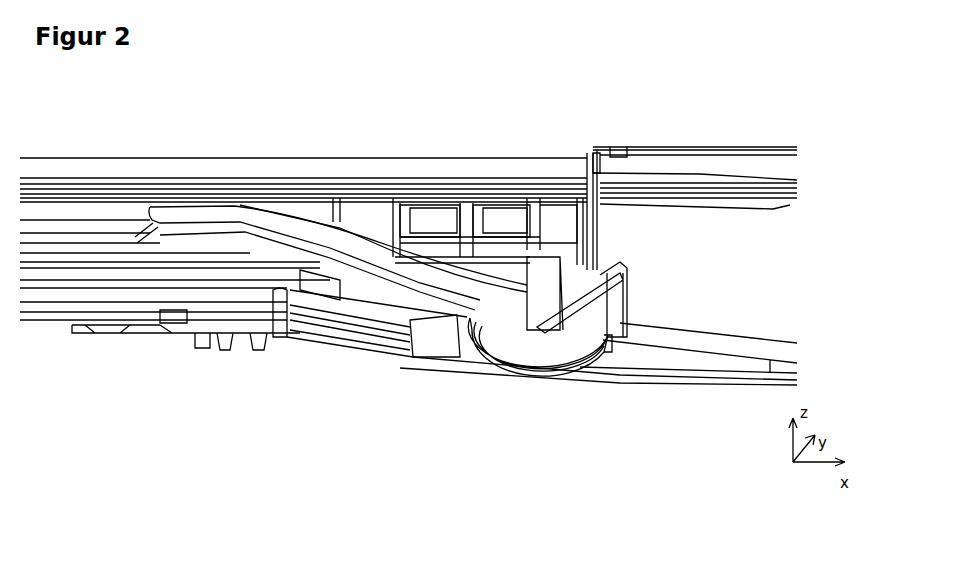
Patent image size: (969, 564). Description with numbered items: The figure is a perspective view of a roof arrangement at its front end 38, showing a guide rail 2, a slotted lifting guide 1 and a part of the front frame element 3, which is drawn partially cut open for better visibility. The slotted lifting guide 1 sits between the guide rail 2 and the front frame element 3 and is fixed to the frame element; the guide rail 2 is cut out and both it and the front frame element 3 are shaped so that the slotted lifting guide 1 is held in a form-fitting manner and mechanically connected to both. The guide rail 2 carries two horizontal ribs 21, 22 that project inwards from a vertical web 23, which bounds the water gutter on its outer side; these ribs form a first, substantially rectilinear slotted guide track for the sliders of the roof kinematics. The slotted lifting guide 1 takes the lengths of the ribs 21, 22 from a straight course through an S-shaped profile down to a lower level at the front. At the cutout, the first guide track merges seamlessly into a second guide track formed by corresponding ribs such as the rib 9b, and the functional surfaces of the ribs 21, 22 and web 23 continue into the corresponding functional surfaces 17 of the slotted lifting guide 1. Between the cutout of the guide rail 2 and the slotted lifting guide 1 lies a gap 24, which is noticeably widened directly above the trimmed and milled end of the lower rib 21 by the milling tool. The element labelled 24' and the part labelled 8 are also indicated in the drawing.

The slotted lifting guide 1 is at (393, 217).
The guide rail 2 is at (180, 168).
The front frame element 3 is at (637, 220).
The Trägerprofil 8 is at (293, 257).
The rib of the second slotted guide track 9b is at (302, 297).
The functional surfaces of the slotted lifting guide 17 is at (362, 270).
The lower rib 21 is at (62, 247).
The rib 22 is at (90, 247).
The vertical web 23 is at (183, 303).
The gap 24 is at (213, 333).
The gebogene Profilleiste 24' is at (285, 209).
The front end 38 is at (490, 98).